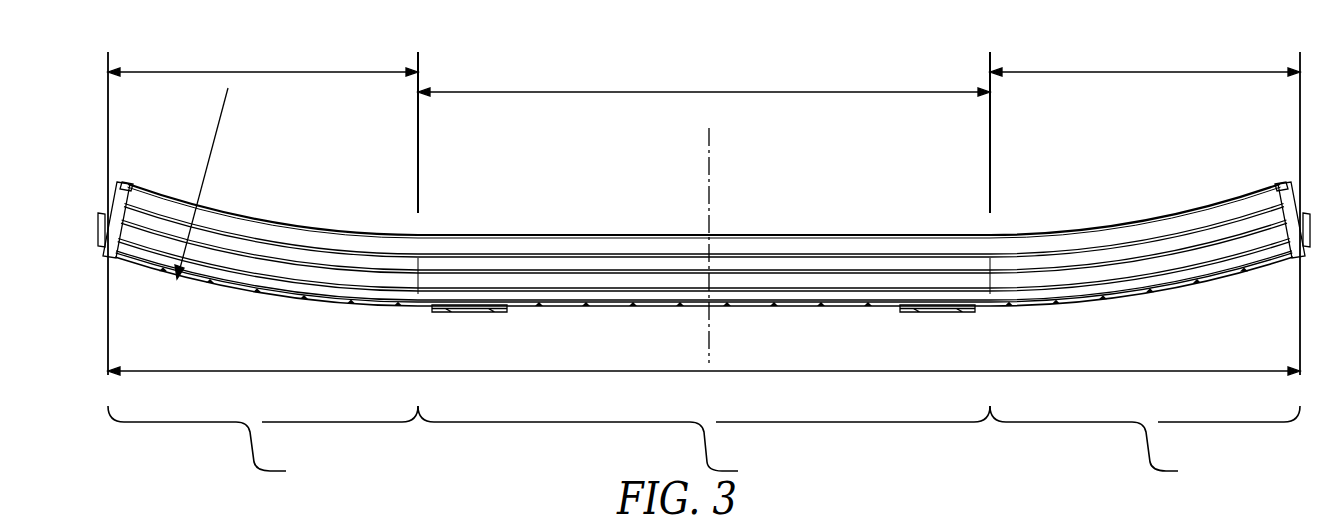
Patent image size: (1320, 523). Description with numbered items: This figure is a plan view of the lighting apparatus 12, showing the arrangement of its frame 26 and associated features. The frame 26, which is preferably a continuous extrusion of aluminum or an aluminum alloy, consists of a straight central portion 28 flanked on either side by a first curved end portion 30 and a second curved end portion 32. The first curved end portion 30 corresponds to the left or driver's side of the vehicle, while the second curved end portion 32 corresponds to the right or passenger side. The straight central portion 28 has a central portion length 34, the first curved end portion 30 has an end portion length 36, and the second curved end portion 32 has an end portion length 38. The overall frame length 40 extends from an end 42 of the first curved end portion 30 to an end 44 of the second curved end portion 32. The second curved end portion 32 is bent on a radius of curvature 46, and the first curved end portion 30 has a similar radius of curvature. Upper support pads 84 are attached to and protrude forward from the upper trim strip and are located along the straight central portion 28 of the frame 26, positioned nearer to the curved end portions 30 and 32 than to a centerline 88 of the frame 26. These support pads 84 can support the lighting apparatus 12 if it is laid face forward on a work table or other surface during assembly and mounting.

The lighting apparatus 12 is at (815, 50).
The frame 26 is at (237, 210).
The straight central portion 28 is at (704, 372).
The first curved end portion 30 is at (1145, 448).
The second curved end portion 32 is at (263, 447).
The central portion length 34 is at (565, 93).
The end portion length 36 is at (1152, 72).
The end portion length 38 is at (255, 72).
The frame length 40 is at (563, 371).
The end 42 is at (1288, 184).
The end 44 is at (121, 184).
The radius of curvature 46 is at (216, 137).
The upper support pads 84 is at (468, 312).
The centerline 88 is at (709, 143).